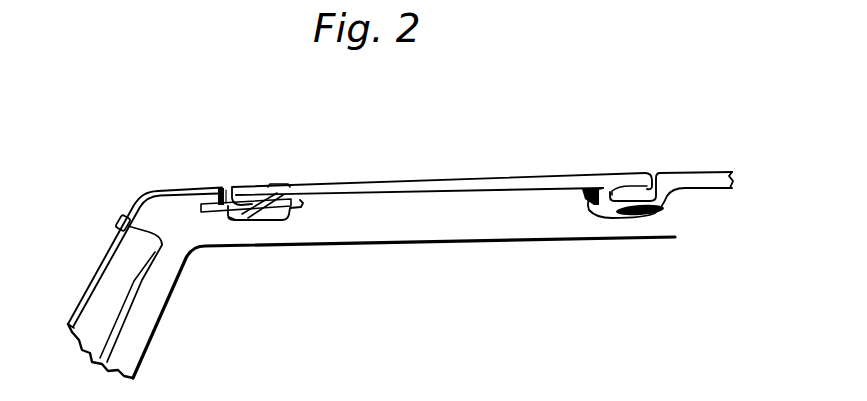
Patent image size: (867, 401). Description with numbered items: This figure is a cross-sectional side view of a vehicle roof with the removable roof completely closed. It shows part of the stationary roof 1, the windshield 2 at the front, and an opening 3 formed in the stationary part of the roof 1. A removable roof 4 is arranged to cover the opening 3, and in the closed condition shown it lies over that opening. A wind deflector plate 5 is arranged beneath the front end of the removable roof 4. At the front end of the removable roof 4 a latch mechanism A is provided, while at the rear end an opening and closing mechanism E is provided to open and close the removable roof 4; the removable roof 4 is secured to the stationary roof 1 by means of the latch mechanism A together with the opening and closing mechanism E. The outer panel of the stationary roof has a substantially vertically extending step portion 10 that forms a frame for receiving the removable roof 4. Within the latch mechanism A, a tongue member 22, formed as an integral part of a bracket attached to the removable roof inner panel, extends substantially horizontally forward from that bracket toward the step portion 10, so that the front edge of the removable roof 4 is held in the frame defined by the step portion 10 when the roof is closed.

The stationary roof 1 is at (697, 174).
The windshield 2 is at (115, 277).
The opening 3 is at (466, 197).
The removable roof 4 is at (462, 180).
The wind deflector plate 5 is at (278, 190).
The step portion 10 is at (226, 187).
The tongue member 22 is at (235, 219).
The latch mechanism A is at (244, 179).
The opening and closing mechanism E is at (627, 220).